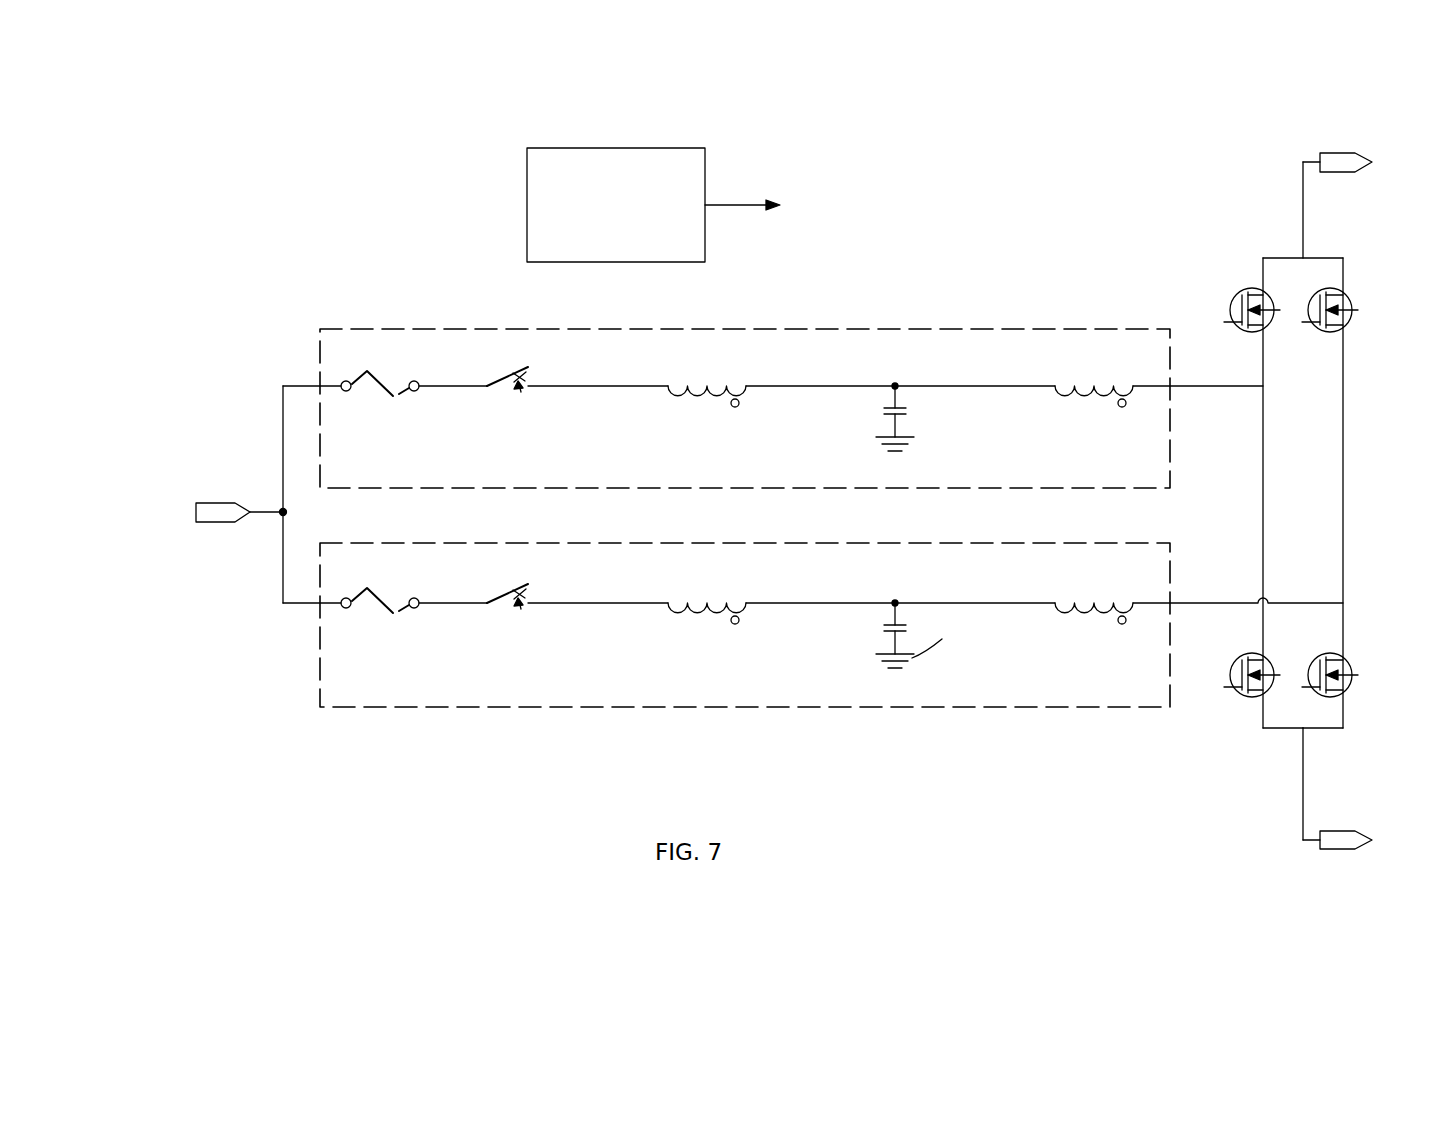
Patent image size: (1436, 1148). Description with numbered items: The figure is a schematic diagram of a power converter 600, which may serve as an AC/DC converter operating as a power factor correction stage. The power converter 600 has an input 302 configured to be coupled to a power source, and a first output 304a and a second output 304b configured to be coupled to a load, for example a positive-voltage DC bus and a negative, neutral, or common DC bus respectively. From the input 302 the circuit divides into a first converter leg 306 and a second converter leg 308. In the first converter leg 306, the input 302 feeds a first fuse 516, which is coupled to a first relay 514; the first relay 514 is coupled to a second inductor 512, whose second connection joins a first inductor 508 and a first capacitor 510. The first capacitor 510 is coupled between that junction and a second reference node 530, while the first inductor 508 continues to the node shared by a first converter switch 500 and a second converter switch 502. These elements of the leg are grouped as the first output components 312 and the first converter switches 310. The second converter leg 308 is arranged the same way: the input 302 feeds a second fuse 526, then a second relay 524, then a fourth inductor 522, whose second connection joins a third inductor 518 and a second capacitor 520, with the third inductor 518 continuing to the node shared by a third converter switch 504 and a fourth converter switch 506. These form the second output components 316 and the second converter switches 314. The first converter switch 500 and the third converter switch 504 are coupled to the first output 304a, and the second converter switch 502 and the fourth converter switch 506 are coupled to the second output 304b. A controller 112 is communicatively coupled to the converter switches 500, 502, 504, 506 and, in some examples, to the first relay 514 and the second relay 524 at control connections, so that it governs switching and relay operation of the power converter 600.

The controller 112 is at (707, 172).
The input 302 is at (216, 501).
The first output 304a is at (1338, 150).
The second output 304b is at (1338, 852).
The first converter leg 306 is at (290, 353).
The second converter leg 308 is at (290, 637).
The first converter switches 310 is at (1279, 748).
The first output components 312 is at (866, 327).
The second converter switches 314 is at (1328, 748).
The second output components 316 is at (878, 712).
The first converter switch 500 is at (1232, 296).
The second converter switch 502 is at (1236, 692).
The third converter switch 504 is at (1347, 296).
The fourth converter switch 506 is at (1350, 690).
The first inductor 508 is at (1097, 394).
The first capacitor 510 is at (883, 406).
The second inductor 512 is at (708, 394).
The first relay 514 is at (521, 392).
The first fuse 516 is at (393, 396).
The third inductor 518 is at (1097, 611).
The second capacitor 520 is at (883, 623).
The fourth inductor 522 is at (708, 611).
The second relay 524 is at (521, 609).
The second fuse 526 is at (393, 613).
The second reference node 530 is at (912, 441).
The power converter 600 is at (1178, 170).